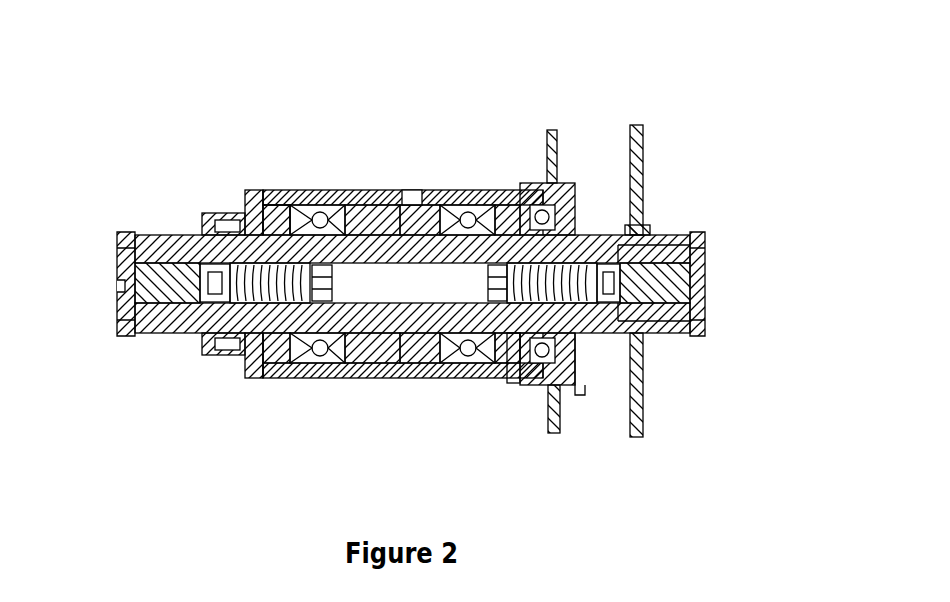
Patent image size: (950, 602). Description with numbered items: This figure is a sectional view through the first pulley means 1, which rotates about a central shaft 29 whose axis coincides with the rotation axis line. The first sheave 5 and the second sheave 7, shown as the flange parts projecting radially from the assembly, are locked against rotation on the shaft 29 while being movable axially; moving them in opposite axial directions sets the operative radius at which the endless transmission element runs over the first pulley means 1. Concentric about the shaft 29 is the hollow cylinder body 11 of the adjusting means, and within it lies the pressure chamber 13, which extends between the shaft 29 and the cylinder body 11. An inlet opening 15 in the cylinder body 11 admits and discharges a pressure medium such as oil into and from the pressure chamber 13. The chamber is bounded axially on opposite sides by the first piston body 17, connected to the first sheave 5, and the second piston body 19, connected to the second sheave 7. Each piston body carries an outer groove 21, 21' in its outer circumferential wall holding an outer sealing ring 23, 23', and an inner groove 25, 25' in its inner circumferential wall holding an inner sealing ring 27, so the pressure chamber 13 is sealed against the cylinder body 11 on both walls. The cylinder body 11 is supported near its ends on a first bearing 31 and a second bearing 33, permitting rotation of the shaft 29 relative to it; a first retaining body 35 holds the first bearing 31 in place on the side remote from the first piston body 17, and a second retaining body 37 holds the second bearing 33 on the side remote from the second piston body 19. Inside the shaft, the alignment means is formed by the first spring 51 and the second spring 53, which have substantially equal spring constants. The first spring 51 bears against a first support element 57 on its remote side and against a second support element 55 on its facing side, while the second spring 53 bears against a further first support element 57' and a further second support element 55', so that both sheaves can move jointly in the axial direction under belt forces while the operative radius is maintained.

The first pulley means 1 is at (205, 108).
The first sheave 5 is at (550, 130).
The second sheave 7 is at (640, 125).
The hollow cylinder body 11 is at (340, 200).
The pressure chamber 13 is at (410, 378).
The inlet opening 15 is at (412, 195).
The first piston body 17 is at (462, 195).
The second piston body 19 is at (317, 213).
The outer groove 21 is at (332, 187).
The outer groove 21' is at (461, 193).
The outer sealing ring 23 is at (376, 187).
The outer sealing ring 23' is at (447, 302).
The inner groove 25 is at (323, 373).
The inner groove 25' is at (467, 381).
The inner sealing ring 27 is at (378, 363).
The shaft 29 is at (165, 246).
The first bearing 31 is at (250, 195).
The second bearing 33 is at (523, 183).
The first retaining body 35 is at (208, 214).
The second retaining body 37 is at (580, 395).
The first spring 51 is at (213, 356).
The second spring 53 is at (530, 385).
The second support element 55 is at (275, 383).
The further second support element 55' is at (508, 404).
The first support element 57 is at (232, 336).
The further first support element 57' is at (596, 367).